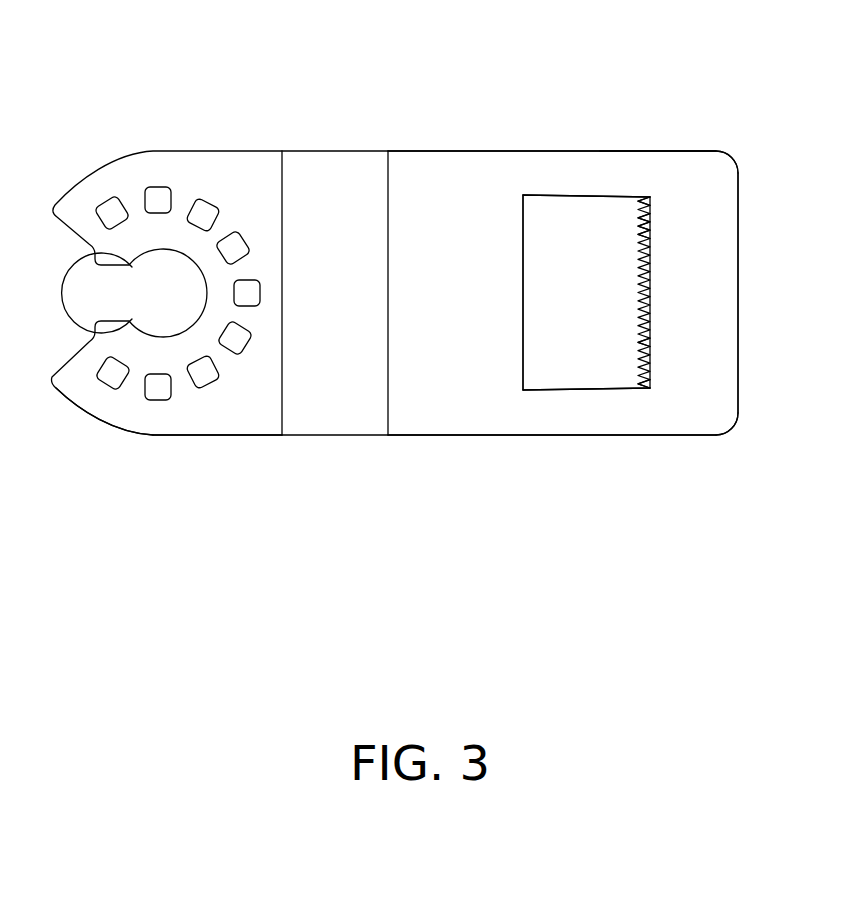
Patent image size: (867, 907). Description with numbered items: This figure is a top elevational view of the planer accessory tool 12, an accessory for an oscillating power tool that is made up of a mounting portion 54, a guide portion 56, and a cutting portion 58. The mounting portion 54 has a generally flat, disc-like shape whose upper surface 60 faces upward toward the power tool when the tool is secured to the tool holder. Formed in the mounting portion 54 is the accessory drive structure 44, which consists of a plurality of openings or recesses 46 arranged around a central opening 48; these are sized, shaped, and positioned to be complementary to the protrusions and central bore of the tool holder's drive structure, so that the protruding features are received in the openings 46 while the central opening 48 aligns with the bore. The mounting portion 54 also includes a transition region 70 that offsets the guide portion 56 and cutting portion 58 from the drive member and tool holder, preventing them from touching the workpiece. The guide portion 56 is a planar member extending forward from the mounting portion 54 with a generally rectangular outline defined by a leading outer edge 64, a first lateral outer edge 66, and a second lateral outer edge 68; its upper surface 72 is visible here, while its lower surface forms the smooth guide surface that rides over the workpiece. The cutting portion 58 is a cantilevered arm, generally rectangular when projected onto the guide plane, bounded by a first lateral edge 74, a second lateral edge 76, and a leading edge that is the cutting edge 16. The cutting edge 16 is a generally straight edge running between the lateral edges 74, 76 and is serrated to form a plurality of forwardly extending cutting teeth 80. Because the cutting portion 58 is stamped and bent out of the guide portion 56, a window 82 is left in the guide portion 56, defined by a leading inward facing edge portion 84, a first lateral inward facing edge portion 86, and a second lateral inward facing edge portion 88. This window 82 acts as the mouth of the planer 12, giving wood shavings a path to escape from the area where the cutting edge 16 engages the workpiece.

The planer accessory tool 12 is at (90, 91).
The cutting edge 16 is at (650, 283).
The accessory drive structure 44 is at (195, 184).
The openings or recesses 46 is at (152, 187).
The central opening 48 is at (152, 292).
The mounting portion 54 is at (152, 436).
The guide portion 56 is at (679, 150).
The cutting portion 58 is at (572, 248).
The upper surface 60 is at (238, 410).
The leading outer edge 64 is at (740, 227).
The first lateral outer edge 66 is at (548, 435).
The second lateral outer edge 68 is at (512, 150).
The transition region 70 is at (340, 150).
The upper surface 72 is at (718, 413).
The first lateral edge 74 is at (622, 390).
The second lateral edge 76 is at (620, 197).
The cutting teeth 80 is at (645, 233).
The window 82 is at (623, 292).
The leading inward facing edge portion 84 is at (650, 343).
The first lateral inward facing edge portion 86 is at (647, 393).
The second lateral inward facing edge portion 88 is at (643, 200).